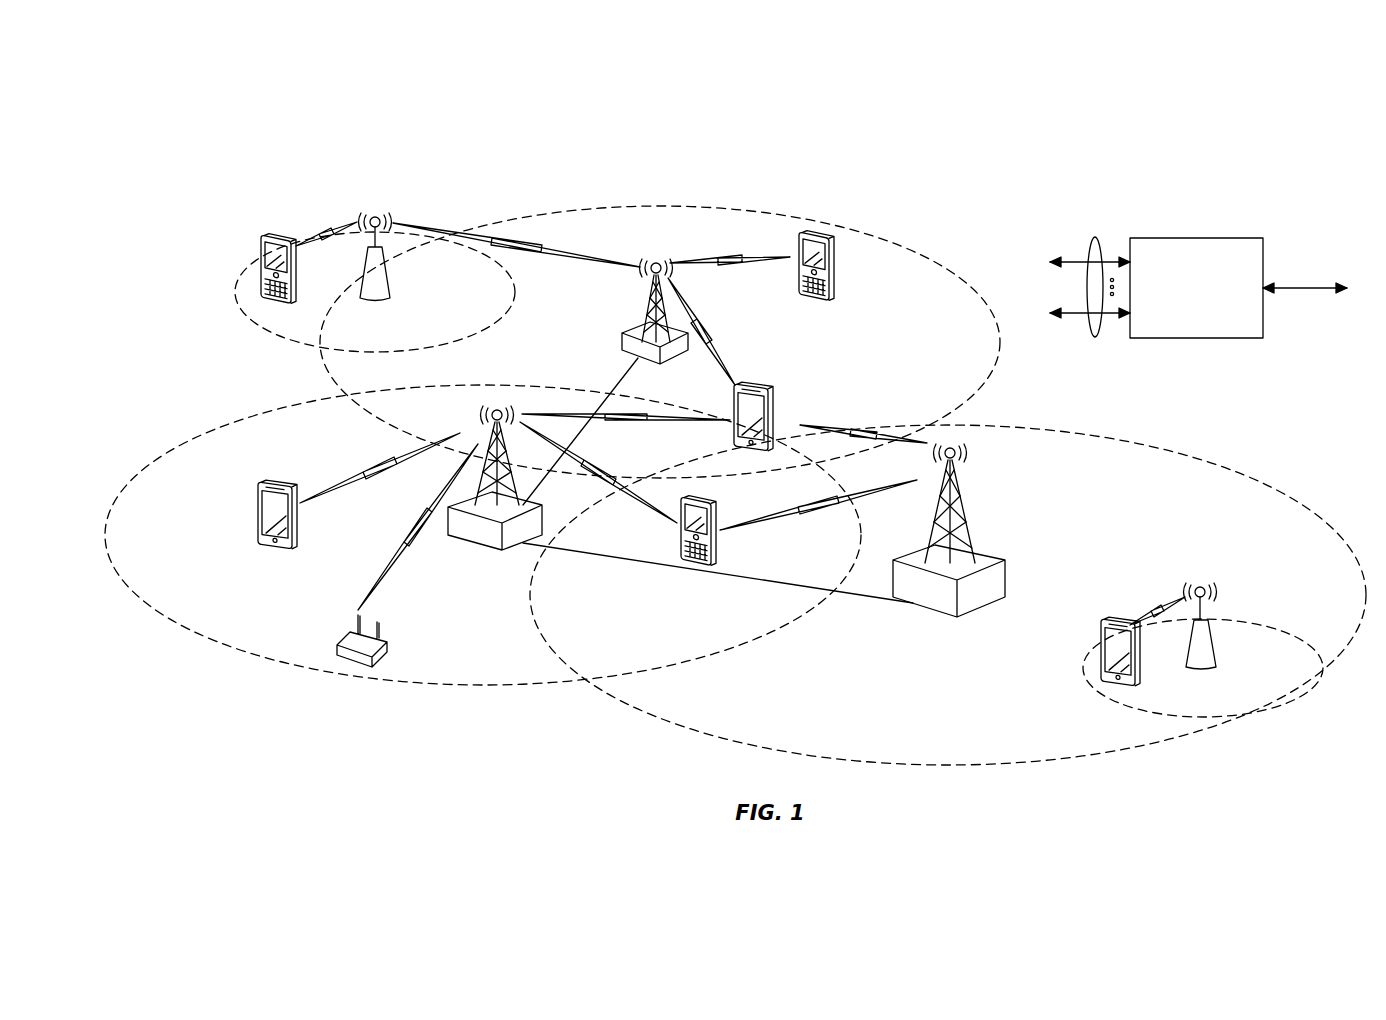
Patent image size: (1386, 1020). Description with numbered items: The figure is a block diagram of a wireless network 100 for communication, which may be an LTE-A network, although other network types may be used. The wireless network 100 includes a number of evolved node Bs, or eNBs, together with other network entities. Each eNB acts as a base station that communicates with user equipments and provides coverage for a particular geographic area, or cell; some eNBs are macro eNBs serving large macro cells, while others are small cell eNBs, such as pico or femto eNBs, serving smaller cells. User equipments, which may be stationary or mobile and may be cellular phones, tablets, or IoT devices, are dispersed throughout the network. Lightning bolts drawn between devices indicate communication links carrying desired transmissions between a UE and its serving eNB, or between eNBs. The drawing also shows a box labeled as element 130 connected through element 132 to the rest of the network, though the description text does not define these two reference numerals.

The wireless network 100 is at (1258, 139).
The core network 130 is at (1197, 237).
The backhaul link 132 is at (1097, 237).